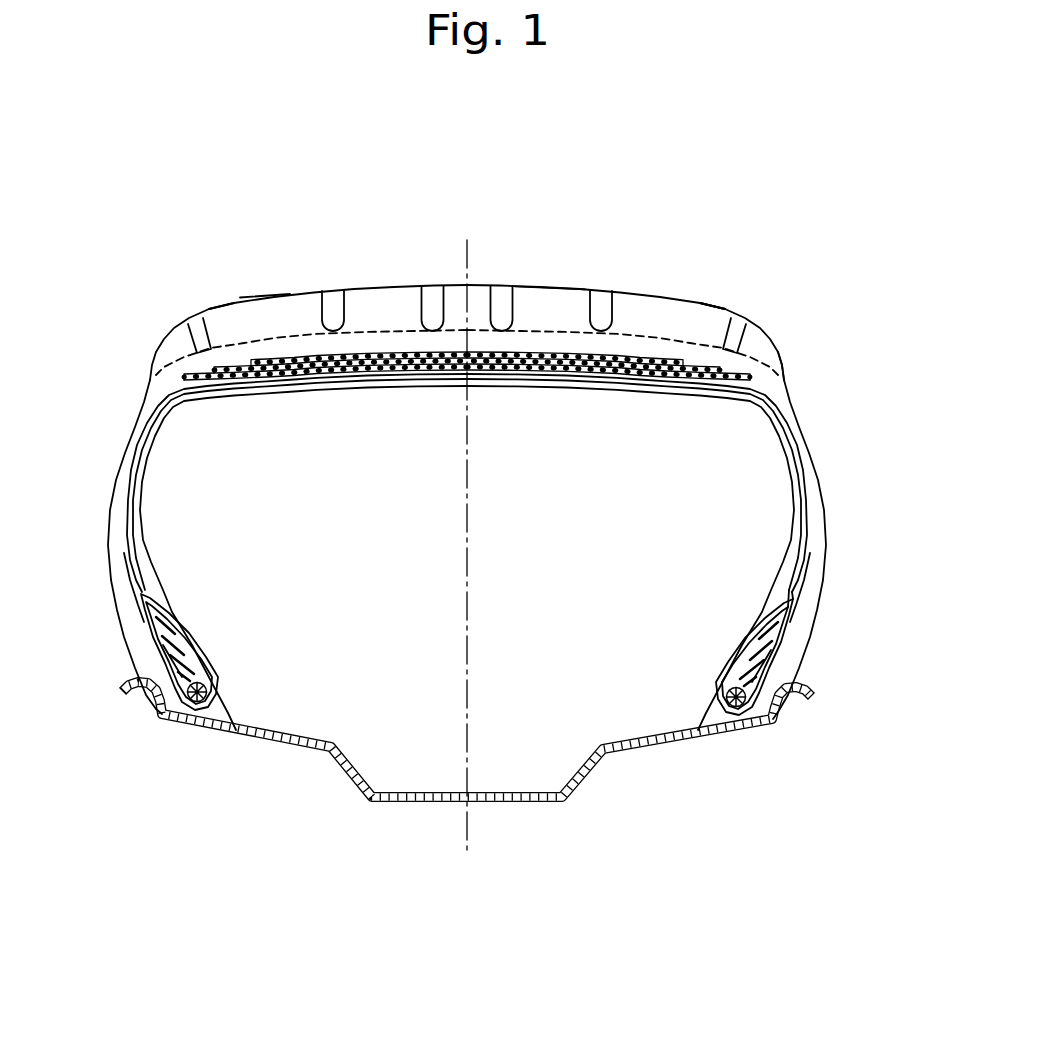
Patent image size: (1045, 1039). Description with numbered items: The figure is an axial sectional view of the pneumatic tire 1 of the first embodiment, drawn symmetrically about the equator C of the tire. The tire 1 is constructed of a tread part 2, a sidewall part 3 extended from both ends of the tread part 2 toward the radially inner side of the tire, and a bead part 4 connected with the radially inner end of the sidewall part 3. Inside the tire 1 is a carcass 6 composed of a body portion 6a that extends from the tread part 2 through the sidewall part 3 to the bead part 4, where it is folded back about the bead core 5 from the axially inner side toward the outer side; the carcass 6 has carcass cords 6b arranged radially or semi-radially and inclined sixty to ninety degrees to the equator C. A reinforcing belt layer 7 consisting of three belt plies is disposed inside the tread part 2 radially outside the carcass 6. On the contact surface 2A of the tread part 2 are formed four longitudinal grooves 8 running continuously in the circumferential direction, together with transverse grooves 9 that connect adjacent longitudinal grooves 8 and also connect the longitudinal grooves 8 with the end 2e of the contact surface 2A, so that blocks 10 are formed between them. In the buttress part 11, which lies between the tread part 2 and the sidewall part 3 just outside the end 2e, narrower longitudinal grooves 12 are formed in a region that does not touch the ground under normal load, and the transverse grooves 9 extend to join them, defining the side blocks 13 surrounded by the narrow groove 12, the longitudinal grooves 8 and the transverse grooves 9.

The pneumatic tire 1 is at (102, 247).
The tread part 2 is at (392, 283).
The contact surface 2A is at (265, 298).
The end of the contact surface 2e is at (720, 330).
The sidewall part 3 is at (827, 522).
The bead part 4 is at (158, 712).
The bead core 5 is at (197, 702).
The carcass 6 is at (913, 553).
The body portion 6a is at (807, 537).
The carcass cords 6b is at (788, 633).
The reinforcing belt layer 7 is at (356, 374).
The longitudinal grooves 8 is at (338, 308).
The transverse grooves 9 is at (638, 335).
The blocks 10 is at (543, 292).
The buttress part 11 is at (783, 366).
The narrow longitudinal grooves 12 is at (187, 318).
The blocks 13 is at (226, 322).
The equator C is at (467, 823).